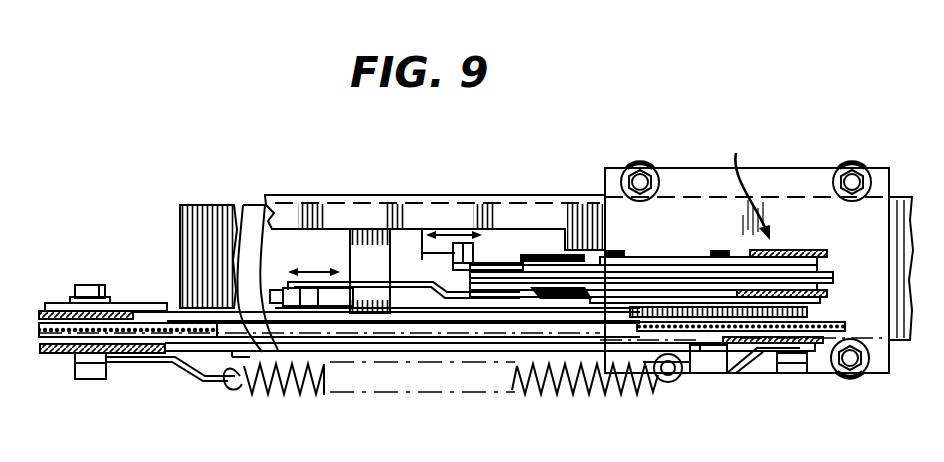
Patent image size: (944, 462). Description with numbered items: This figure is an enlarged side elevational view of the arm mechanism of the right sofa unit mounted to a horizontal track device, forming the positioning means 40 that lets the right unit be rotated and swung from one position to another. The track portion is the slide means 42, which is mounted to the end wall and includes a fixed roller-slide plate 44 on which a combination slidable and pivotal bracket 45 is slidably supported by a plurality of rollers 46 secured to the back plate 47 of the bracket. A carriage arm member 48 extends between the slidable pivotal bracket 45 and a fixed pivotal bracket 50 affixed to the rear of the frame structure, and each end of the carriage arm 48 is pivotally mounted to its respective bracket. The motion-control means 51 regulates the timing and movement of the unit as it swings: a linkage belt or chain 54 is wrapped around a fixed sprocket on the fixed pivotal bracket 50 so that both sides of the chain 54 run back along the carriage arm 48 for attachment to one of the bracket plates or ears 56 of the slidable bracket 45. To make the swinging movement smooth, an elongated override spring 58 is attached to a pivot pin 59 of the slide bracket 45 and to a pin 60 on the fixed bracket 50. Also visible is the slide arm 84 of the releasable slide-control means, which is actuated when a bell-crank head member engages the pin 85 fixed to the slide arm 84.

The positioning means 40 is at (398, 367).
The slide means 42 is at (686, 165).
The roller-slide plate 44 is at (253, 205).
The slidable pivotal bracket 45 is at (727, 405).
The rollers 46 is at (638, 163).
The back plate 47 is at (797, 169).
The carriage arm member 48 is at (218, 311).
The fixed pivotal bracket 50 is at (60, 302).
The motion-control means 51 is at (82, 340).
The linkage belt or chain 54 is at (174, 304).
The bracket plates or ears 56 is at (765, 352).
The override spring 58 is at (557, 390).
The pivot pin 59 is at (800, 312).
The pin 60 is at (95, 284).
The slide arm 84 is at (660, 256).
The pin 85 is at (476, 252).